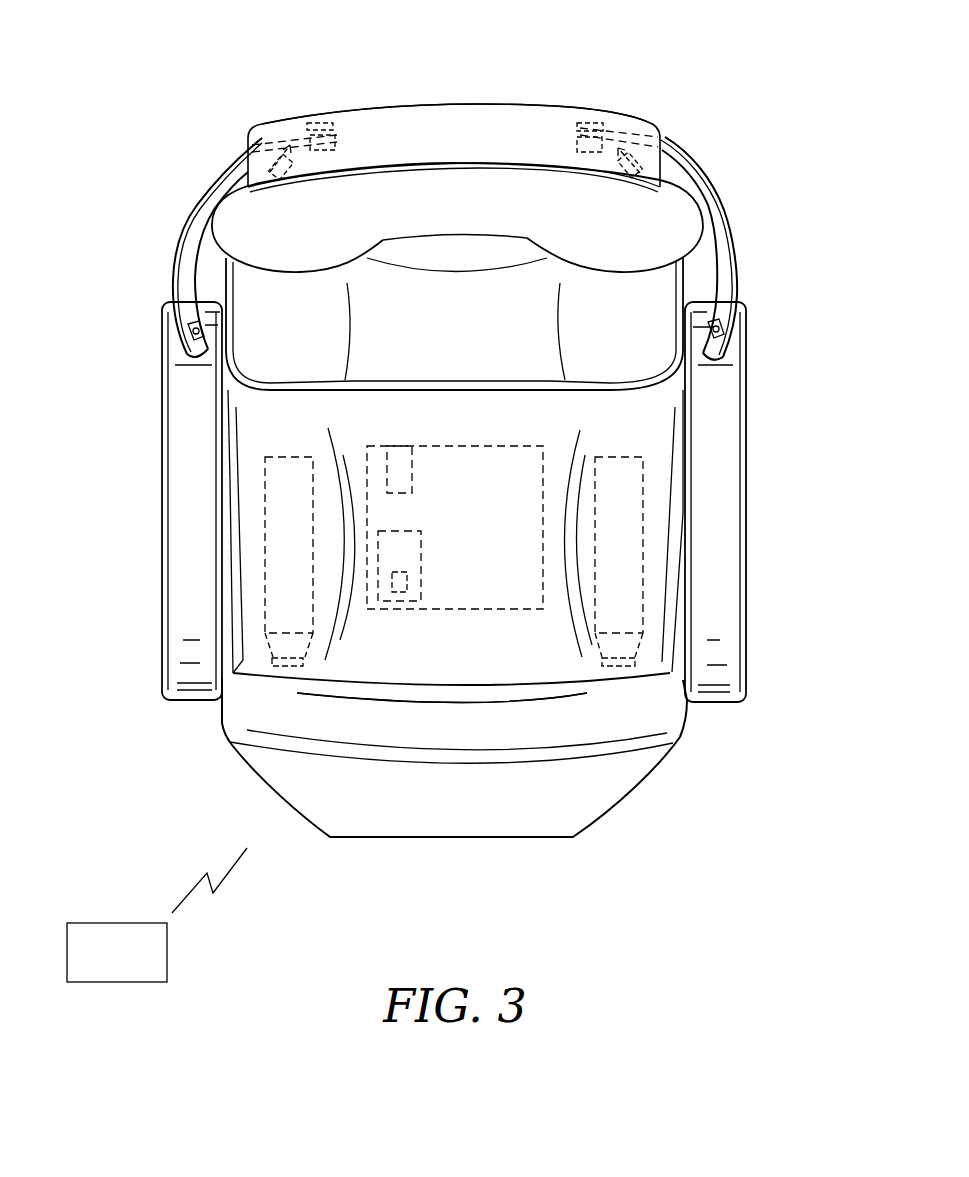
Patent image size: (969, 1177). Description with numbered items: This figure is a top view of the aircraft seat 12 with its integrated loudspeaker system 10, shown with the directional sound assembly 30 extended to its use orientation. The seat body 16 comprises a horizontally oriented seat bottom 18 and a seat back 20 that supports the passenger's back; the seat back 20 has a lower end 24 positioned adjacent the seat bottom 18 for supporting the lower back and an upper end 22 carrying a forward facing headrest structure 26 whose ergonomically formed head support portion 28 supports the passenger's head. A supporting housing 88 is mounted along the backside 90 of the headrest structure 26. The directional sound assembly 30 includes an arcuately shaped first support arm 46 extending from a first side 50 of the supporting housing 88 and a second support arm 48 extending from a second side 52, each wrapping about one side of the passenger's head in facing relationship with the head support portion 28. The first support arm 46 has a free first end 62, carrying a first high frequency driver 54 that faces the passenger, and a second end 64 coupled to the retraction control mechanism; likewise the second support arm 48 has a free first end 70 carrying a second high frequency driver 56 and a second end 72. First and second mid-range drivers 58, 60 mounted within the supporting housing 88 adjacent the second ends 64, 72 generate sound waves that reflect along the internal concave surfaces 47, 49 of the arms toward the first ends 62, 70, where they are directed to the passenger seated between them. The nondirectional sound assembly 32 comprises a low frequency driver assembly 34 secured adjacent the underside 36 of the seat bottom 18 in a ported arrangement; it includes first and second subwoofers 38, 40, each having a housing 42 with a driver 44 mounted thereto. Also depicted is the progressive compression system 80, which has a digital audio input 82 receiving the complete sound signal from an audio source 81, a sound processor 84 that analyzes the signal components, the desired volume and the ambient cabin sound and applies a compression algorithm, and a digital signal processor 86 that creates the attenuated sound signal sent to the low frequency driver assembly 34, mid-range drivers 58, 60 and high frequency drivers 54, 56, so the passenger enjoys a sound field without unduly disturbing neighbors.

The loudspeaker system 10 is at (126, 207).
The aircraft seat 12 is at (257, 718).
The seat body 16 is at (285, 440).
The seat bottom 18 is at (445, 672).
The seat back 20 is at (644, 231).
The upper end 22 is at (252, 231).
The lower end 24 is at (618, 360).
The headrest structure 26 is at (478, 183).
The head support portion 28 is at (440, 223).
The directional sound assembly 30 is at (153, 220).
The nondirectional sound assembly 32 is at (322, 672).
The low frequency driver assembly 34 is at (245, 620).
The underside 36 is at (715, 502).
The first subwoofer 38 is at (267, 540).
The second subwoofer 40 is at (643, 540).
The housing 42 is at (265, 487).
The driver 44 is at (288, 660).
The first support arm 46 is at (180, 273).
The internal concave surface 47 is at (198, 256).
The second support arm 48 is at (723, 265).
The internal concave surface 49 is at (717, 253).
The first side 50 is at (220, 197).
The second side 52 is at (688, 197).
The first high frequency driver 54 is at (192, 333).
The second high frequency driver 56 is at (720, 328).
The first mid-range driver 58 is at (298, 148).
The second mid-range driver 60 is at (620, 140).
The free first end 62 is at (192, 356).
The second end 64 is at (250, 152).
The free first end 70 is at (702, 352).
The second end 72 is at (665, 150).
The progressive compression system 80 is at (470, 445).
The audio source 81 is at (104, 963).
The digital audio input 82 is at (390, 445).
The sound processor 84 is at (380, 603).
The digital signal processor 86 is at (408, 600).
The supporting housing 88 is at (548, 108).
The backside 90 is at (703, 202).